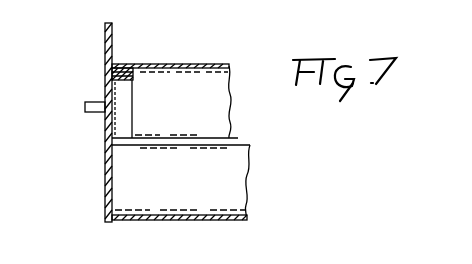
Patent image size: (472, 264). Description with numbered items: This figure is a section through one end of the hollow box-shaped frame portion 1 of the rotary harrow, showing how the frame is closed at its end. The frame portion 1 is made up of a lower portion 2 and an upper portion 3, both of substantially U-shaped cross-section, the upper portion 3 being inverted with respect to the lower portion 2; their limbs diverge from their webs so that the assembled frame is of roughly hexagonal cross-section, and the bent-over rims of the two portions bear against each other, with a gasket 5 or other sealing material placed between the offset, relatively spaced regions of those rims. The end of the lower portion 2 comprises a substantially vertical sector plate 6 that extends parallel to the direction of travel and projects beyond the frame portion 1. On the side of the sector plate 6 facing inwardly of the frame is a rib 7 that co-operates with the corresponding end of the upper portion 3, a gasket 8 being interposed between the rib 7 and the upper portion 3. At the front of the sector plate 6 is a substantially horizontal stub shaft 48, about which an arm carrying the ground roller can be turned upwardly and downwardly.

The hollow box-shaped frame portion 1 is at (196, 65).
The lower portion 2 is at (170, 221).
The upper portion 3 is at (226, 63).
The gasket 5 is at (236, 122).
The sector plate 6 is at (105, 30).
The rib 7 is at (128, 94).
The gasket 8 is at (118, 68).
The stub shaft 48 is at (85, 103).